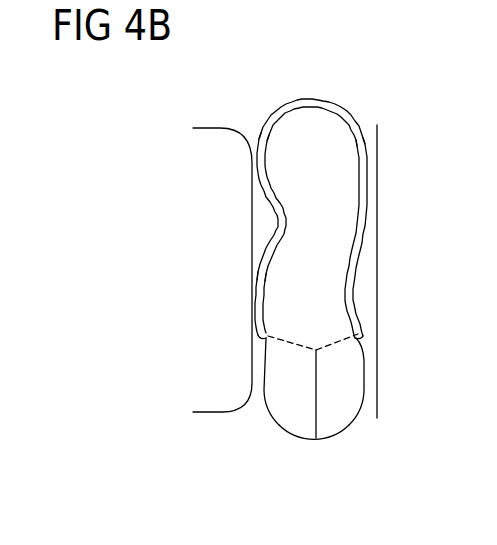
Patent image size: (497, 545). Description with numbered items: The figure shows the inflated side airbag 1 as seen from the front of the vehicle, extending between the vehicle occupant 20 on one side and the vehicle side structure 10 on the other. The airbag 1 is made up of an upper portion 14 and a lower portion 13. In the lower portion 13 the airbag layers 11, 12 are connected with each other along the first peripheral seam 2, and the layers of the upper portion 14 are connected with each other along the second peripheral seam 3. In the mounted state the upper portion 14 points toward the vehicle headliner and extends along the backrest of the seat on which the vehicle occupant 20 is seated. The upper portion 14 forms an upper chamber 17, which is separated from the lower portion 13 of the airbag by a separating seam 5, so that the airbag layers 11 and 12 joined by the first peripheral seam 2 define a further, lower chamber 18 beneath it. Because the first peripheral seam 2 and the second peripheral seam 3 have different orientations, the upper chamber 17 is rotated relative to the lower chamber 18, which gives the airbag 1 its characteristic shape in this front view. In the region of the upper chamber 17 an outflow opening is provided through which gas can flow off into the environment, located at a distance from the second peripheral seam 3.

The airbag 1 is at (345, 97).
The first peripheral seam 2 is at (316, 417).
The second peripheral seam 3 is at (360, 158).
The separating seam 5 is at (335, 343).
The vehicle side structure 10 is at (375, 197).
The airbag layer 11 is at (345, 397).
The airbag layer 12 is at (280, 400).
The lower portion 13 is at (278, 442).
The upper portion 14 is at (272, 105).
The upper chamber 17 is at (282, 254).
The lower chamber 18 is at (277, 367).
The vehicle occupant 20 is at (213, 167).